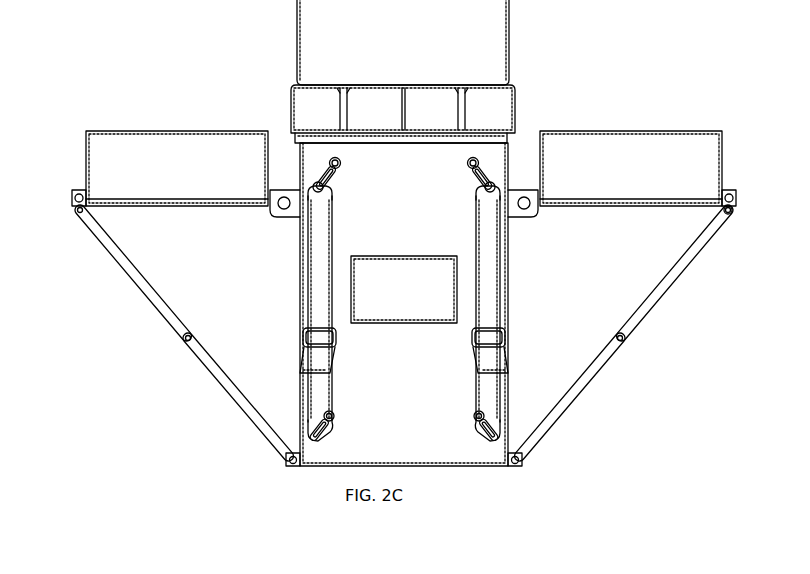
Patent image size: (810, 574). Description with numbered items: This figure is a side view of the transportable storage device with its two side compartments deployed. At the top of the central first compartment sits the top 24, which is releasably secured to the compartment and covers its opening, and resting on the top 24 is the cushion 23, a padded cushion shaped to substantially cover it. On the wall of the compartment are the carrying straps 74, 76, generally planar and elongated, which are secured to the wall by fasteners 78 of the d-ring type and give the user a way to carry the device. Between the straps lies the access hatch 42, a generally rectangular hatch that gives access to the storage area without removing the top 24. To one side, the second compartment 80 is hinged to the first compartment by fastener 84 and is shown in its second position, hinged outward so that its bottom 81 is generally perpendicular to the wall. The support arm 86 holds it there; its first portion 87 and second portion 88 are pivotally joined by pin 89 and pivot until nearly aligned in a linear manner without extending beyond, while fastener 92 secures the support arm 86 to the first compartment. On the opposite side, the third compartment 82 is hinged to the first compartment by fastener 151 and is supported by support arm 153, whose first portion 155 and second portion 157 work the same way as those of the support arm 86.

The cushion 23 is at (488, 24).
The top 24 is at (502, 83).
The access hatch 42 is at (423, 300).
The carrying strap 74 is at (315, 263).
The carrying strap 76 is at (490, 276).
The fastener 78 is at (312, 188).
The second compartment 80 is at (659, 104).
The bottom 81 is at (680, 205).
The third compartment 82 is at (116, 98).
The fastener 84 is at (529, 216).
The support arm 86 is at (630, 334).
The first portion 87 is at (583, 390).
The second portion 88 is at (662, 280).
The pin 89 is at (617, 337).
The fastener 92 is at (522, 457).
The fastener 151 is at (277, 209).
The support arm 153 is at (186, 334).
The first portion 155 is at (127, 255).
The second portion 157 is at (222, 388).